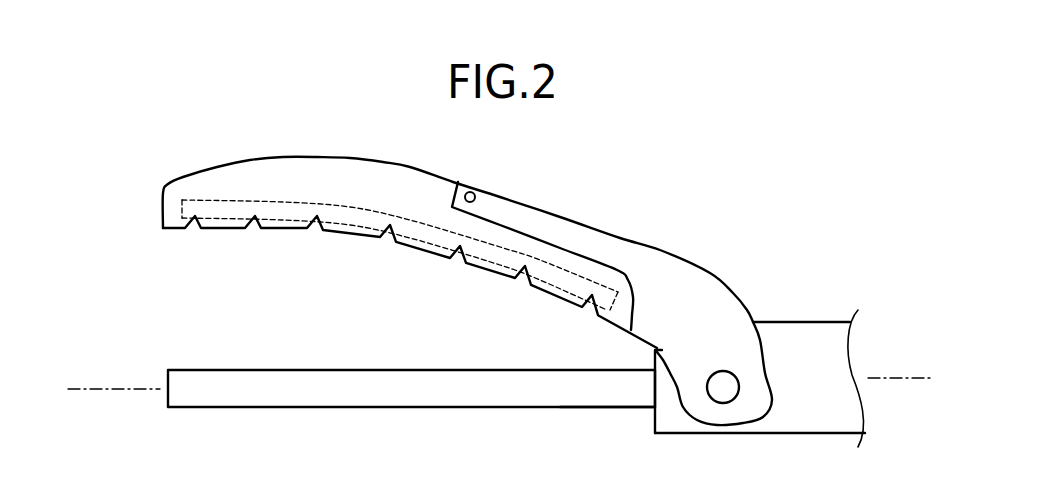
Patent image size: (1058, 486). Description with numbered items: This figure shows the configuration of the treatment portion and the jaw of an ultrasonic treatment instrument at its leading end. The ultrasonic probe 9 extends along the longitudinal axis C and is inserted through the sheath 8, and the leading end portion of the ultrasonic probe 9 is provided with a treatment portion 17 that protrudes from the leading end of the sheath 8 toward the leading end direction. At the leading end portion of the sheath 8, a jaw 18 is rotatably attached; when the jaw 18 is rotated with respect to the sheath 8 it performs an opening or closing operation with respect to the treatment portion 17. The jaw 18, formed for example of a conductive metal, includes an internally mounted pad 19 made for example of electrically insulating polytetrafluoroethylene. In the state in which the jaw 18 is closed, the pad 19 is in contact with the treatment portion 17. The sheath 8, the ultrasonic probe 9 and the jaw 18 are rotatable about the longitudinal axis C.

The jaw 18 is at (647, 245).
The pad 19 is at (287, 210).
The sheath 8 is at (804, 343).
The treatment portion 17 is at (412, 392).
The ultrasonic probe 9 is at (598, 392).
The longitudinal axis C is at (86, 392).